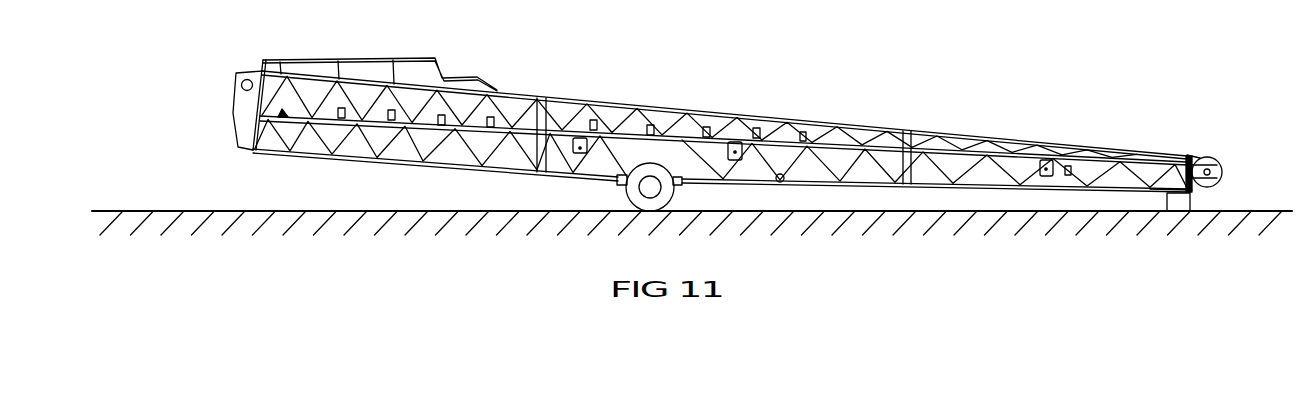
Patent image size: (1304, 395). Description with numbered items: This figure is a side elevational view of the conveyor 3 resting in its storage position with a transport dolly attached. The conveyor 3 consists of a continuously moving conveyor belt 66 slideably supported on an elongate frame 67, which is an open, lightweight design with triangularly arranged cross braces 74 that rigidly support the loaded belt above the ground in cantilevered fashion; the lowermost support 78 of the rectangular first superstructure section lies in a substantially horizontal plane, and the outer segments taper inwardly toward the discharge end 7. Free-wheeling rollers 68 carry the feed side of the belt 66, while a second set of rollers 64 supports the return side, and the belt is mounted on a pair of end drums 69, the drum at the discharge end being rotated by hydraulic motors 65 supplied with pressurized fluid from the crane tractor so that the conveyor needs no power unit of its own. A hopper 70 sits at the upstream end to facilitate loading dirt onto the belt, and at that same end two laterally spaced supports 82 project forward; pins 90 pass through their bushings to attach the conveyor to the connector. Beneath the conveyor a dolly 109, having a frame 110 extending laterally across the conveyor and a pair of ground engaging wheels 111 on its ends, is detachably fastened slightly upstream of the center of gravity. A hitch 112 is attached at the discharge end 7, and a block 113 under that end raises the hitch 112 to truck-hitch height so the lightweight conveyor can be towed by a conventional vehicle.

The conveyor 3 is at (852, 119).
The discharge end 7 is at (1186, 152).
The second set of rollers 64 is at (508, 105).
The hydraulic motors 65 is at (1211, 170).
The conveyor belt 66 is at (680, 122).
The elongate frame 67 is at (783, 176).
The free-wheeling rollers 68 is at (580, 153).
The end drums 69 is at (1214, 158).
The hopper 70 is at (377, 58).
The cross braces 74 is at (277, 143).
The lowermost support 78 is at (360, 163).
The supports 82 is at (240, 70).
The pins 90 is at (240, 88).
The dolly 109 is at (679, 209).
The dolly frame 110 is at (677, 187).
The ground engaging wheels 111 is at (628, 192).
The hitch 112 is at (1192, 190).
The block 113 is at (1183, 213).